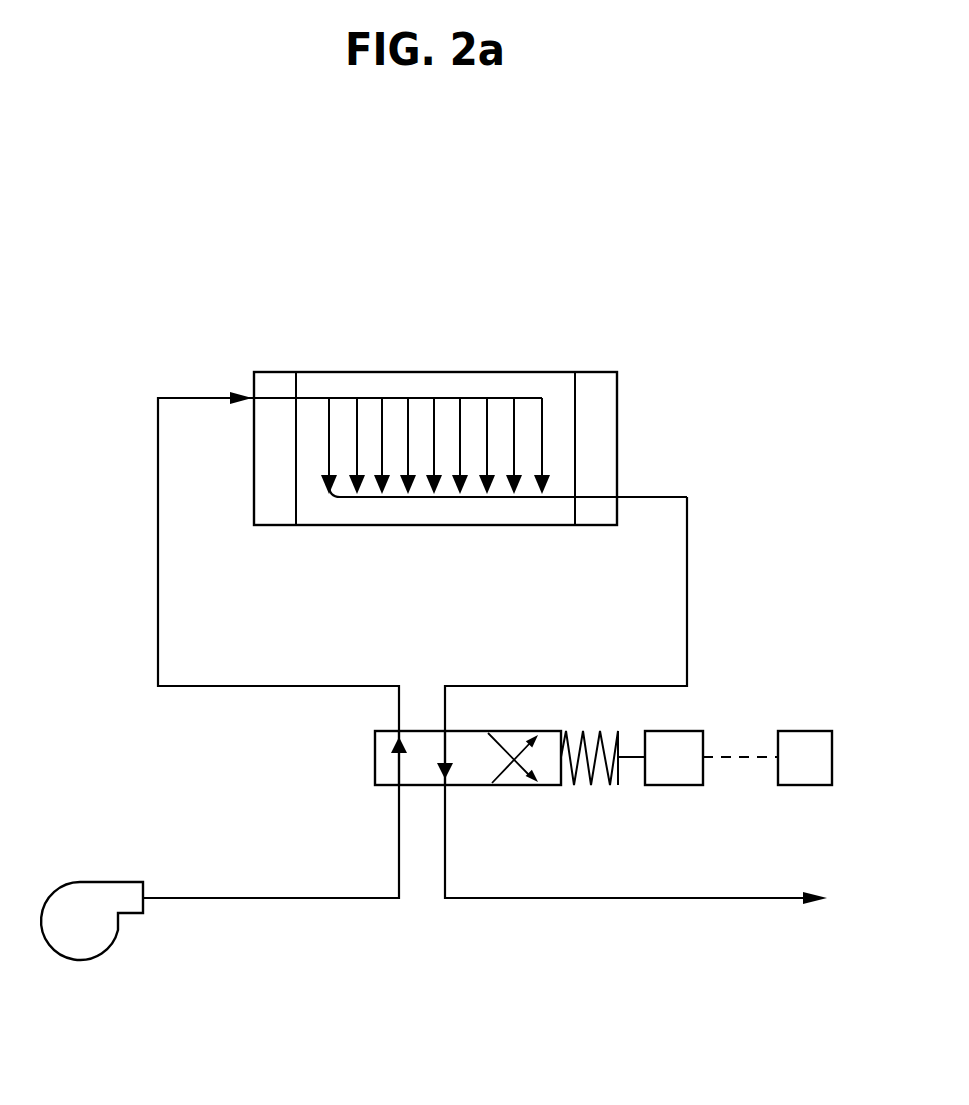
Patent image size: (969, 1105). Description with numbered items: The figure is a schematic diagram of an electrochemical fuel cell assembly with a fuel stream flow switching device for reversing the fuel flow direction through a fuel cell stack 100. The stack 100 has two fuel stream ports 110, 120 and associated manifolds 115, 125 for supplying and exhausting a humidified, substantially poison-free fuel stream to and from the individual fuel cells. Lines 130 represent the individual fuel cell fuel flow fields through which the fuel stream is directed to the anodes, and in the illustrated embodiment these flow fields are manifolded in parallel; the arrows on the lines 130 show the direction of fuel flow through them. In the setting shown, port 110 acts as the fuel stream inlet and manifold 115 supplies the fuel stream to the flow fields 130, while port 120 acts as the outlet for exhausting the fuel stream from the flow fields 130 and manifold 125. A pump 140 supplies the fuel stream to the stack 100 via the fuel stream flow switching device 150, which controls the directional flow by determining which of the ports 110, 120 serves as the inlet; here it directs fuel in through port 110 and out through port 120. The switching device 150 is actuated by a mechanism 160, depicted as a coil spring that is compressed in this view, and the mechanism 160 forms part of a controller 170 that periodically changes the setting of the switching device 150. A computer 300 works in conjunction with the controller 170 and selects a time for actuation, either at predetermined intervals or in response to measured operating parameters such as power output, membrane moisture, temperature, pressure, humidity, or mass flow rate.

The fuel cell stack 100 is at (362, 245).
The fuel stream port 110 is at (278, 400).
The manifold 115 is at (367, 392).
The fuel stream port 120 is at (592, 497).
The manifold 125 is at (442, 502).
The fuel flow fields 130 is at (487, 445).
The pump 140 is at (83, 958).
The fuel stream flow switching device 150 is at (385, 768).
The mechanism 160 is at (590, 778).
The controller 170 is at (683, 740).
The computer 300 is at (815, 738).